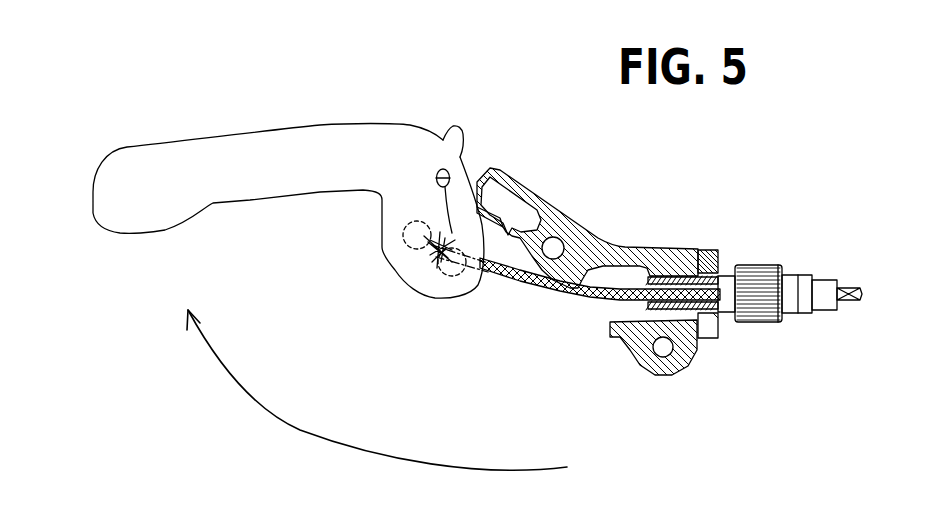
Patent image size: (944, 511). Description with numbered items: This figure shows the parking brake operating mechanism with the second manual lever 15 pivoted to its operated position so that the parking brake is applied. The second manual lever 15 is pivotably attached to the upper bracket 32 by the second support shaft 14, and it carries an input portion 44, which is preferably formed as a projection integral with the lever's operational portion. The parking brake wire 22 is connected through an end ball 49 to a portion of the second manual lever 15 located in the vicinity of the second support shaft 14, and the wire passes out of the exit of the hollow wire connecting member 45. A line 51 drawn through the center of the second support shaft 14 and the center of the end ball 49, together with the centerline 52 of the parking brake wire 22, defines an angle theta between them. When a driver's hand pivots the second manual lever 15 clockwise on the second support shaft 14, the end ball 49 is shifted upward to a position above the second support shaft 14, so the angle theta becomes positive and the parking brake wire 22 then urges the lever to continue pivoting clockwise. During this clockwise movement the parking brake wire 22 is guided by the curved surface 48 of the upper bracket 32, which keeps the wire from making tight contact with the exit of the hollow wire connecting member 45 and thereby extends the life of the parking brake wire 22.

The second manual lever 15 is at (270, 140).
The input portion 44 is at (459, 127).
The centerline of the parking brake wire 52 is at (435, 236).
The end ball 49 is at (403, 240).
The line 51 is at (442, 270).
The second support shaft 14 is at (462, 278).
The upper bracket 32 is at (606, 240).
The curved surface 48 is at (548, 285).
The parking brake wire 22 is at (580, 298).
The hollow wire connecting member 45 is at (730, 268).